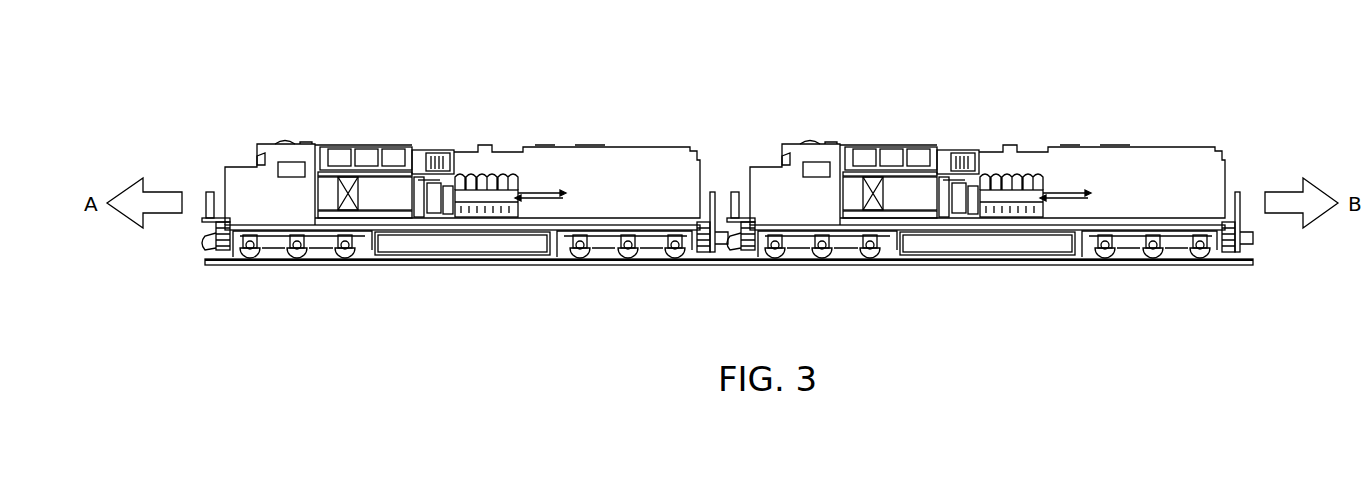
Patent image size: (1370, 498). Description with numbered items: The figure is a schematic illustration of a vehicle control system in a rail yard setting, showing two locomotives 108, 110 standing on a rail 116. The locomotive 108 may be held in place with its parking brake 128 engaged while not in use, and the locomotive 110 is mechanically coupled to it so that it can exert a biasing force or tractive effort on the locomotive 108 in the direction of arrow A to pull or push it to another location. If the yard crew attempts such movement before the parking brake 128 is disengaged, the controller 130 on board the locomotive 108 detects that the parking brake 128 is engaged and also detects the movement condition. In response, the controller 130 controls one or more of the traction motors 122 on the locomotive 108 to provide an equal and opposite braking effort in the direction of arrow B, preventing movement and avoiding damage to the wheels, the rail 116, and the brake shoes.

The locomotive 108 is at (994, 115).
The locomotive 110 is at (504, 115).
The rail 116 is at (243, 265).
The traction motor 122 is at (360, 223).
The parking brake 128 is at (1138, 254).
The controller 130 is at (294, 146).